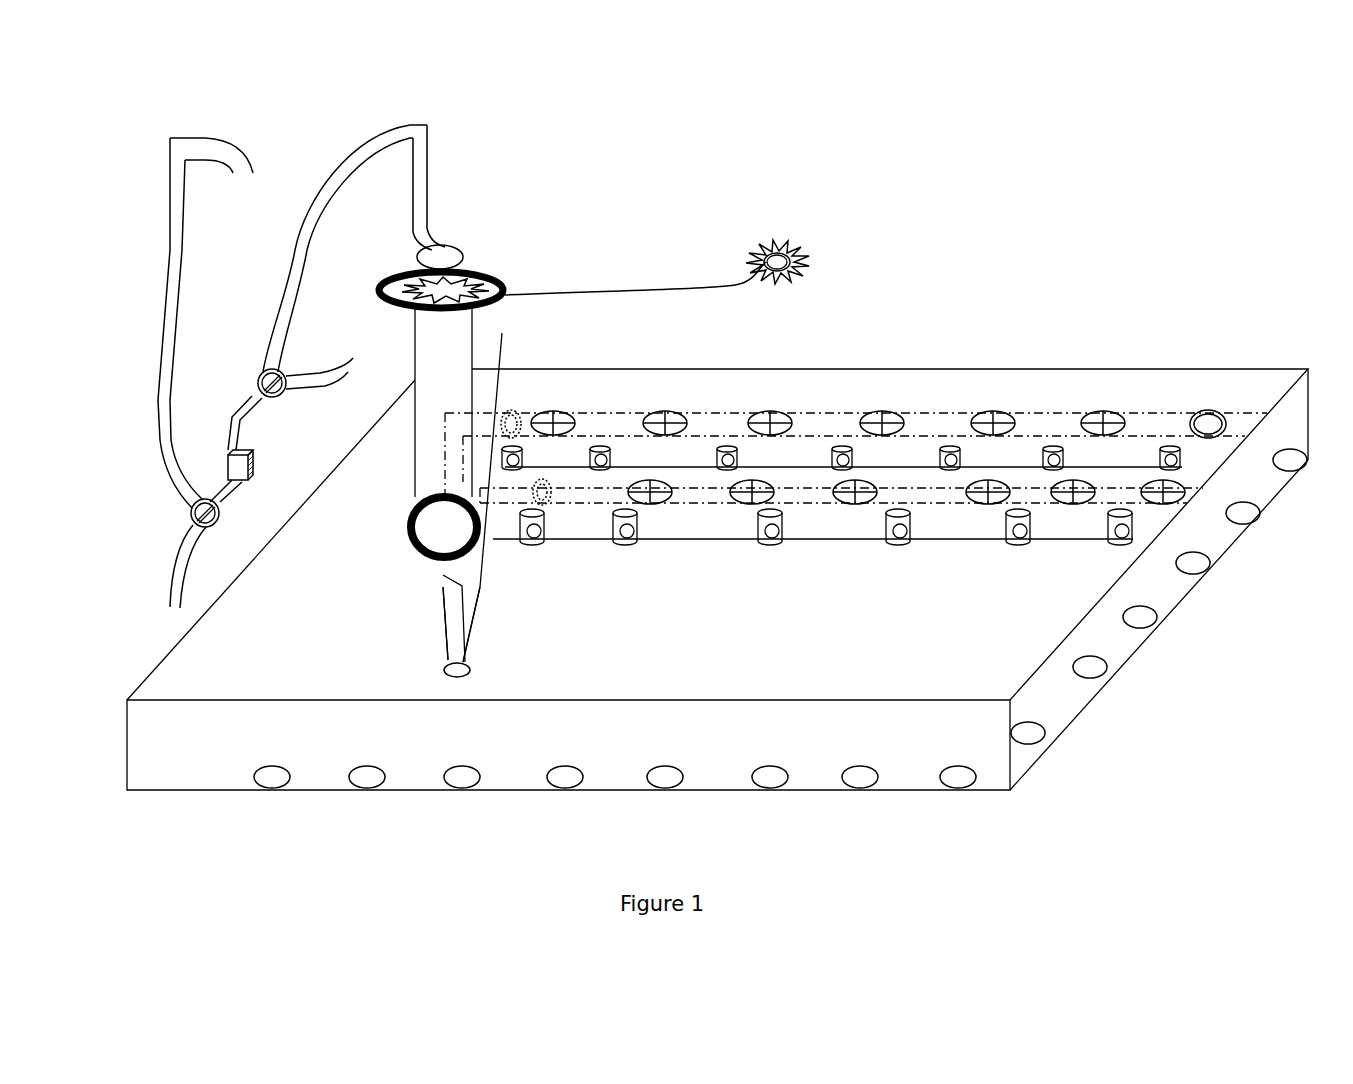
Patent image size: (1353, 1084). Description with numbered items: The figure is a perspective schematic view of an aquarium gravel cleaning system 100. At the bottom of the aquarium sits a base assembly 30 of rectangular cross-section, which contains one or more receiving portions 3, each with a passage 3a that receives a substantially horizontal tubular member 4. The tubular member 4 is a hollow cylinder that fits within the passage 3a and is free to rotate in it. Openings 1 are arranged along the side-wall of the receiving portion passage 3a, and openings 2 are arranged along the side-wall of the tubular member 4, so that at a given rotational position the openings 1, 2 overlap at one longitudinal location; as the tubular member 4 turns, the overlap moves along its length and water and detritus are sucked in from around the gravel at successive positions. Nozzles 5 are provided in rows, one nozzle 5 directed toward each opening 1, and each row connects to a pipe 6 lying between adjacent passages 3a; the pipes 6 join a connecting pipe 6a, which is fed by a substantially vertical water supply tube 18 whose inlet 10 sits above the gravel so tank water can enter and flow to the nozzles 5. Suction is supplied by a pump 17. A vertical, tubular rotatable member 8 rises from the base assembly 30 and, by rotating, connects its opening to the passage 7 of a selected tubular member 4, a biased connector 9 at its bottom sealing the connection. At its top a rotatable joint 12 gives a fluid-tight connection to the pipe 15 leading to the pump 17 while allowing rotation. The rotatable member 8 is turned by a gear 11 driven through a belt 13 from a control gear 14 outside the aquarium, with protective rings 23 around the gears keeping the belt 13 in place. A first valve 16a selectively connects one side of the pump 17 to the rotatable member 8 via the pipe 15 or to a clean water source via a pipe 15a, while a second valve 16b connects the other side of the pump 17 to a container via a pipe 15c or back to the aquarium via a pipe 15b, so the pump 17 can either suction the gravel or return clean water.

The gravel cleaning system 100 is at (1040, 208).
The openings 1 is at (1185, 423).
The openings 2 is at (1215, 423).
The receiving portion 3 is at (1047, 427).
The passage 3a is at (967, 417).
The tubular member 4 is at (540, 488).
The nozzles 5 is at (912, 517).
The pipe 6 is at (705, 537).
The connecting pipe 6a is at (483, 587).
The passage 7 is at (487, 497).
The rotatable member 8 is at (427, 327).
The biased connector 9 is at (470, 540).
The inlet 10 is at (445, 587).
The gear 11 is at (442, 293).
The rotatable joint 12 is at (437, 252).
The belt 13 is at (585, 295).
The control gear 14 is at (783, 265).
The pipe 15 is at (295, 227).
The pipe 15a is at (333, 380).
The pipe 15b is at (183, 580).
The pipe 15c is at (173, 263).
The first valve 16a is at (253, 380).
The second valve 16b is at (198, 503).
The pump 17 is at (240, 463).
The water supply tube 18 is at (448, 627).
The protective rings 23 is at (383, 287).
The base assembly 30 is at (1022, 640).